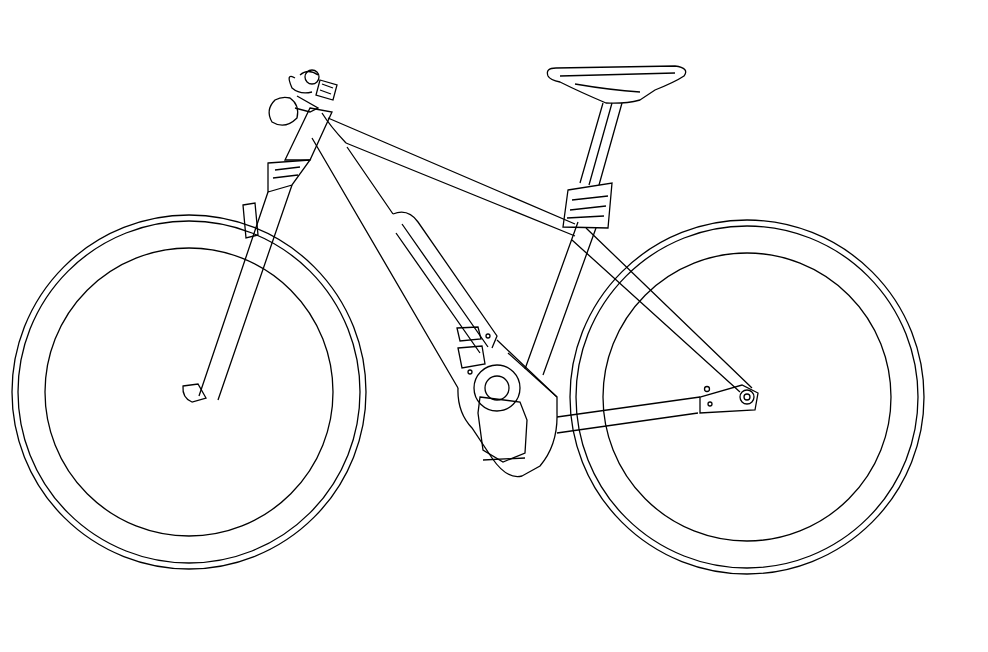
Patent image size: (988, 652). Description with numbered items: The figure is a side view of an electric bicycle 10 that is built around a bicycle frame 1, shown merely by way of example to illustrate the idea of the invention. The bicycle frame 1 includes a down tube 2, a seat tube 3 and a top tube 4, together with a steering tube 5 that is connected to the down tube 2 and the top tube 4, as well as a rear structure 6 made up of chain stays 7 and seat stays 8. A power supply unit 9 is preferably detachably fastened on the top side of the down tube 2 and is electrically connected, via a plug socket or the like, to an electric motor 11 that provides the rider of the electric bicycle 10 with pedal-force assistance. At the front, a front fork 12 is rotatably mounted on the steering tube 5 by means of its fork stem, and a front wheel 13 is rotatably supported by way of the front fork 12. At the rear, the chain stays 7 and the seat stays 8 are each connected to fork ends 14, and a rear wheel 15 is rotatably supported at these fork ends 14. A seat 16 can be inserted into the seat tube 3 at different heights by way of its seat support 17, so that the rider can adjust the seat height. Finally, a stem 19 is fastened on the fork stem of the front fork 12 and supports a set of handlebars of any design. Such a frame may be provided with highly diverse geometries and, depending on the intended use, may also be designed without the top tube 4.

The bicycle frame 1 is at (441, 153).
The down tube 2 is at (418, 297).
The seat tube 3 is at (547, 328).
The top tube 4 is at (480, 197).
The steering tube 5 is at (295, 143).
The rear structure 6 is at (638, 215).
The chain stays 7 is at (633, 417).
The seat stays 8 is at (692, 342).
The power supply unit 9 is at (440, 285).
The electric bicycle 10 is at (795, 140).
The electric motor 11 is at (510, 427).
The front fork 12 is at (205, 202).
The front wheel 13 is at (113, 533).
The fork ends 14 is at (728, 400).
The rear wheel 15 is at (860, 285).
The seat 16 is at (612, 70).
The seat support 17 is at (600, 143).
The stem 19 is at (332, 78).